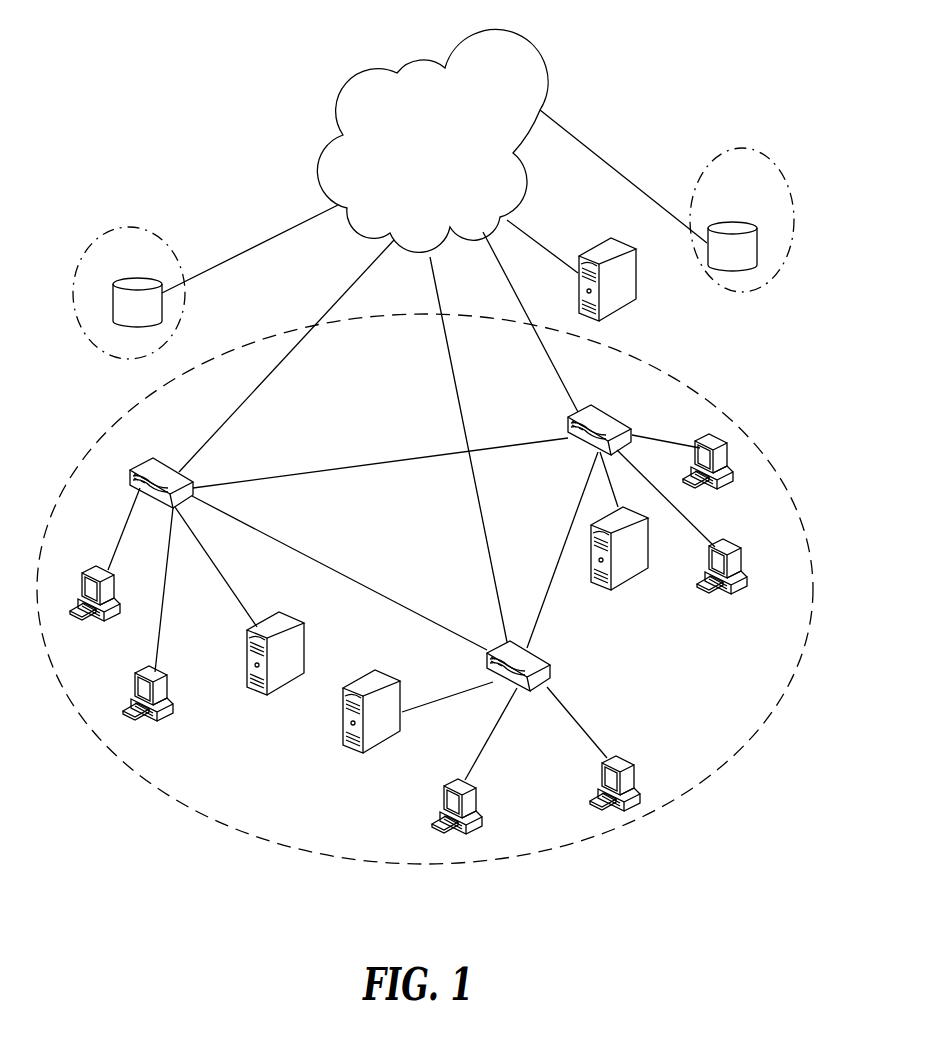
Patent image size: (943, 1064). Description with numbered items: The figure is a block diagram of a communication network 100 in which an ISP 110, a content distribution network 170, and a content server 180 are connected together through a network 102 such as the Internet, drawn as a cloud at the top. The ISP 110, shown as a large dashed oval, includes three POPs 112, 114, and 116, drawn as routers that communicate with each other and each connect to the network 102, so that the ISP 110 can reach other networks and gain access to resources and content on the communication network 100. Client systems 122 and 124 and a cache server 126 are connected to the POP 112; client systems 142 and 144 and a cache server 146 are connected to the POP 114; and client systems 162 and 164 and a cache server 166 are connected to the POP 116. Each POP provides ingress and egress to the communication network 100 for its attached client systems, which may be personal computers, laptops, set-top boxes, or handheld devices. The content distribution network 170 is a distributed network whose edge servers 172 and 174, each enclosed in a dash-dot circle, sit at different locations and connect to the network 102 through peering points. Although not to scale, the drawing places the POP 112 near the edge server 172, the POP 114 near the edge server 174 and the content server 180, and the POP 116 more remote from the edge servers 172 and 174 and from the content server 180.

The communication network 100 is at (133, 933).
The network 102 is at (514, 56).
The ISP 110 is at (751, 418).
The POP 112 is at (157, 458).
The POP 114 is at (594, 405).
The POP 116 is at (488, 656).
The client system 122 is at (93, 567).
The client system 124 is at (148, 667).
The cache server 126 is at (262, 697).
The client system 142 is at (718, 435).
The client system 144 is at (730, 540).
The cache server 146 is at (616, 590).
The client system 162 is at (463, 778).
The client system 164 is at (625, 757).
The cache server 166 is at (360, 752).
The content distribution network 170 is at (148, 228).
The edge server 172 is at (138, 278).
The edge server 174 is at (733, 222).
The content server 180 is at (606, 238).